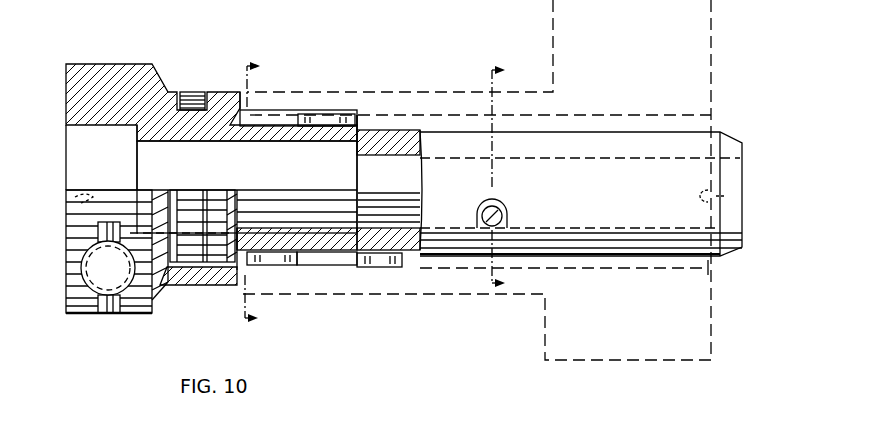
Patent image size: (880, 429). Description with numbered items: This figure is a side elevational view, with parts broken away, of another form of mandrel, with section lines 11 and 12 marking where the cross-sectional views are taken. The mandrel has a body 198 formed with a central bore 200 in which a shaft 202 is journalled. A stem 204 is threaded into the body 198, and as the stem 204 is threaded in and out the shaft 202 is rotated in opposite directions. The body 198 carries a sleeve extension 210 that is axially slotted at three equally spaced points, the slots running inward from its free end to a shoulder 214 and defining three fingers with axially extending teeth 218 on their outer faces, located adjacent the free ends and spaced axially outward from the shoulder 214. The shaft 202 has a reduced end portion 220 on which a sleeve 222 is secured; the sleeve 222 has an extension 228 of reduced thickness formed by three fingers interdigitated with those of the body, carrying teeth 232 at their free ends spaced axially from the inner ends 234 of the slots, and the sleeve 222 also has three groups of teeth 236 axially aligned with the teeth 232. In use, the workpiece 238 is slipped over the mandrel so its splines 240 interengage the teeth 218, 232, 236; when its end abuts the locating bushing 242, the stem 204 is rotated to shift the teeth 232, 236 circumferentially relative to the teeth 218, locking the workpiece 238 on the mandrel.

The body 198 is at (143, 64).
The locating bushing 242 is at (228, 91).
The central bore 200 is at (184, 148).
The shaft 202 is at (330, 155).
The teeth 218 is at (333, 114).
The inner ends of the slots 234 is at (362, 132).
The sleeve extension 210 is at (349, 143).
The shoulder 214 is at (240, 228).
The reduced end portion 220 is at (410, 178).
The sleeve 222 is at (636, 139).
The splines 240 is at (572, 120).
The workpiece 238 is at (706, 27).
The teeth 232 is at (288, 265).
The extension 228 is at (340, 265).
The teeth 236 is at (395, 268).
The stem 204 is at (110, 300).
The section line 11 is at (267, 185).
The section line 12 is at (508, 178).